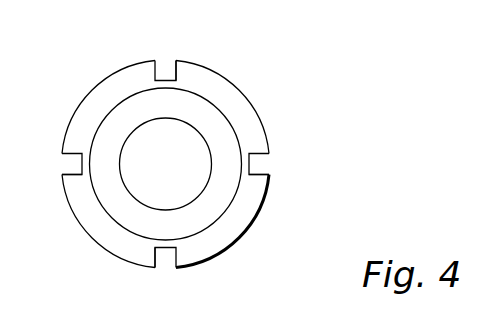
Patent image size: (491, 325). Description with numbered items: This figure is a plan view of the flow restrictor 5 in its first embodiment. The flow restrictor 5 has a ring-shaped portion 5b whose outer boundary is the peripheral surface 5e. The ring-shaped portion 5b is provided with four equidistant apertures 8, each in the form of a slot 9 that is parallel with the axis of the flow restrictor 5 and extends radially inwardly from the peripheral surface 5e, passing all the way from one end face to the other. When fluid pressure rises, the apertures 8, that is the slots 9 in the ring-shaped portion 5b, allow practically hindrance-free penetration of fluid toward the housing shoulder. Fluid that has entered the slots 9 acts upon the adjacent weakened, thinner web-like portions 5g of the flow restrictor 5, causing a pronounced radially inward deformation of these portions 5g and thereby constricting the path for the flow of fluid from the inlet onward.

The flow restrictor 5 is at (273, 90).
The ring-shaped portion 5b is at (92, 223).
The peripheral surface 5e is at (238, 242).
The web-like portions 5g is at (88, 160).
The apertures 8 is at (169, 62).
The slots 9 is at (163, 68).